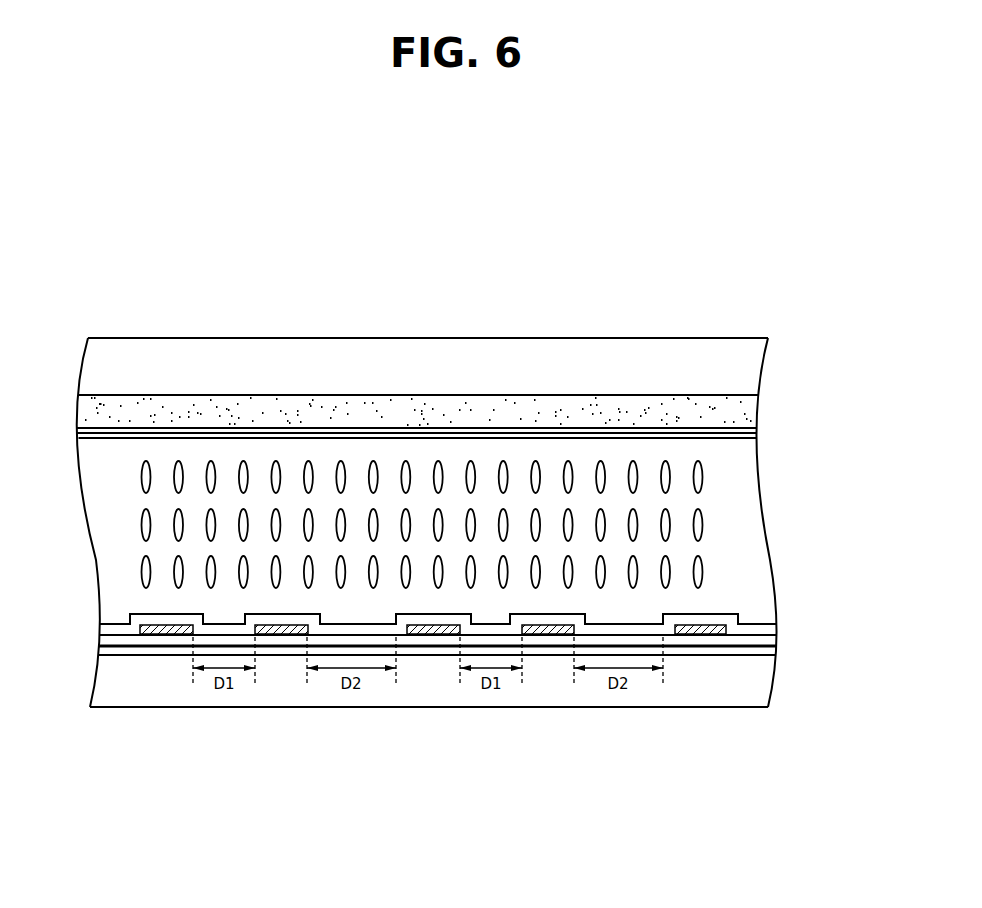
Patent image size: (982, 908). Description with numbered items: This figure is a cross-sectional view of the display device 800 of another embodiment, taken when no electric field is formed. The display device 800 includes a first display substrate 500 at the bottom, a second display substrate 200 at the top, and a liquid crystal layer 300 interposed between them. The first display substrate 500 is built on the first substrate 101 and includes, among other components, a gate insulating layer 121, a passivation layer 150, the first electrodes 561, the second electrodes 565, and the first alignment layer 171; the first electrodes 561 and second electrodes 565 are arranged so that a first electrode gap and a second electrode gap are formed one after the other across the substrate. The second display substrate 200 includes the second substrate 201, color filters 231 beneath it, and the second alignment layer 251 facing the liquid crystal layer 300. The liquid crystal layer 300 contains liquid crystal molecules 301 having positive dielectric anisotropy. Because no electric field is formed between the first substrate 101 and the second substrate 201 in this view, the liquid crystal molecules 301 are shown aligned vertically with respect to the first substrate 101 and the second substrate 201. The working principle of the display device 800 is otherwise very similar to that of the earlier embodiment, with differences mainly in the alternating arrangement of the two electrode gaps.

The display device 800 is at (716, 282).
The second display substrate 200 is at (783, 338).
The second substrate 201 is at (457, 352).
The color filters 231 is at (378, 415).
The second alignment layer 251 is at (299, 437).
The liquid crystal layer 300 is at (783, 438).
The liquid crystal molecules 301 is at (701, 571).
The first display substrate 500 is at (783, 622).
The first alignment layer 171 is at (117, 628).
The second electrodes 565 is at (180, 628).
The first electrodes 561 is at (283, 632).
The passivation layer 150 is at (382, 638).
The gate insulating layer 121 is at (750, 650).
The first substrate 101 is at (625, 697).